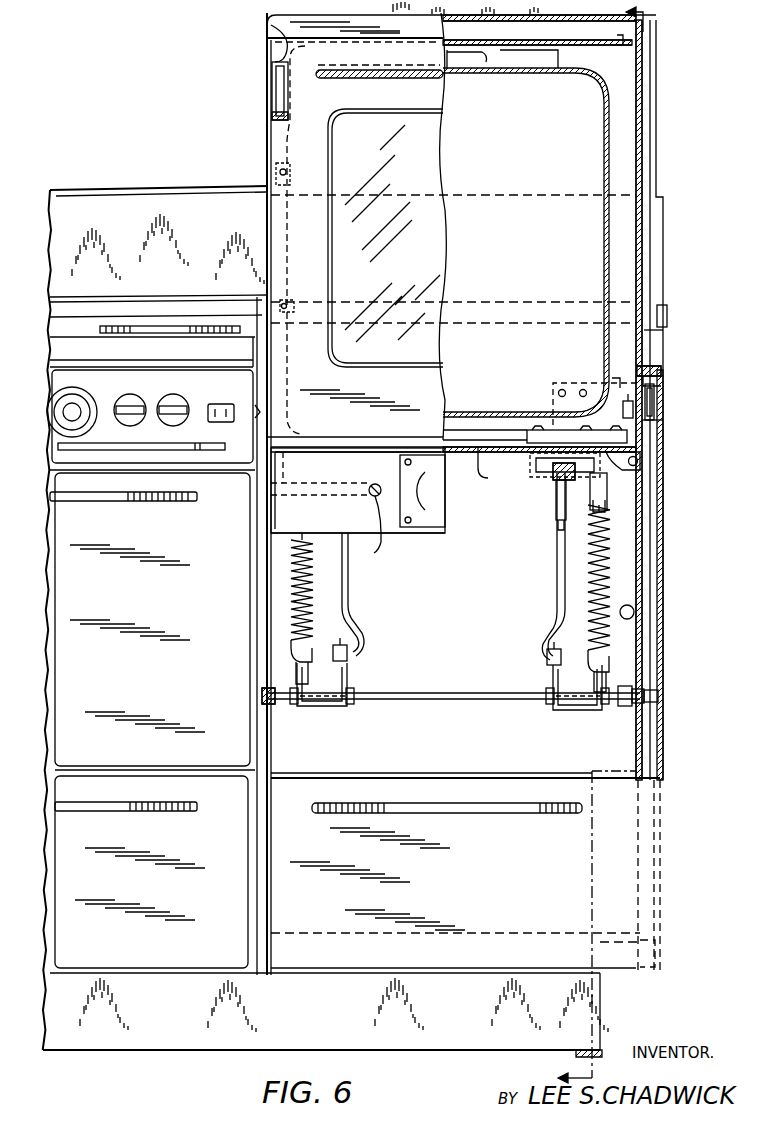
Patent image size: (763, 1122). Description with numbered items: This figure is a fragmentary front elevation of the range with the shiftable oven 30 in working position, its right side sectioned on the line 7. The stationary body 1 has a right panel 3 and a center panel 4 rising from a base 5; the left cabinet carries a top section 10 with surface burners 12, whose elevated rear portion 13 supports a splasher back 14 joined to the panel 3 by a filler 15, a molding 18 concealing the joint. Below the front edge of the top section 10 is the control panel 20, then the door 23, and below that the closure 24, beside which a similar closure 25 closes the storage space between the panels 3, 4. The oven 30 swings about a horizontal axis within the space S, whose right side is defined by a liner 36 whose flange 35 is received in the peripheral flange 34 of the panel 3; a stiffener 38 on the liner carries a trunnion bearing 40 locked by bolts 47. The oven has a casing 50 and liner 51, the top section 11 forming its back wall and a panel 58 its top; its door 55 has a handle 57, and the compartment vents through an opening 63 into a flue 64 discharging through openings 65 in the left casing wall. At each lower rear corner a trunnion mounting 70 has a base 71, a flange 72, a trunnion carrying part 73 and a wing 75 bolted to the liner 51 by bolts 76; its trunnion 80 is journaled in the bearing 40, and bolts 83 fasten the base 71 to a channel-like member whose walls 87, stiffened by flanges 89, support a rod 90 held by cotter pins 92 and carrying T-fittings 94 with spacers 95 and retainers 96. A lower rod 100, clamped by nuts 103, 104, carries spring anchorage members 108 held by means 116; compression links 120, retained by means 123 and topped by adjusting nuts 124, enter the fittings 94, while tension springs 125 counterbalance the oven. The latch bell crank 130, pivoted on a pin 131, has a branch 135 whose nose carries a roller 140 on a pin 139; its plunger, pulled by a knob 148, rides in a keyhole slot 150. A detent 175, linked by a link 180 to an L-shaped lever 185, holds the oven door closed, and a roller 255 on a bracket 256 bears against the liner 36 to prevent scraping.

The body structure 1 is at (52, 846).
The right panel 3 is at (660, 641).
The intermediate or center panel 4 is at (257, 634).
The base 5 is at (290, 1016).
The section line 7 is at (591, 545).
The top section 10 is at (105, 350).
The top section 11 is at (657, 166).
The heating elements or surface burners 12 is at (167, 332).
The elevated rear portion 13 is at (218, 325).
The splasher back 14 is at (184, 193).
The filler 15 is at (650, 334).
The molding 18 is at (84, 302).
The panel 20 is at (52, 378).
The door 23 is at (50, 560).
The closure 24 is at (190, 878).
The closure 25 is at (430, 880).
The shiftable oven 30 is at (643, 262).
The peripheral flange 34 is at (660, 370).
The flange 35 is at (660, 384).
The liner 36 is at (634, 612).
The stiffener 38 is at (645, 545).
The trunnion bearing 40 is at (640, 432).
The bolts 47 is at (657, 400).
The casing 50 is at (642, 104).
The liner 51 is at (600, 82).
The door 55 is at (447, 383).
The handle 57 is at (405, 78).
The panel 58 is at (268, 22).
The opening 63 is at (462, 68).
The flue 64 is at (275, 130).
The openings 65 is at (272, 96).
The trunnion mounting 70 is at (530, 428).
The base 71 is at (640, 450).
The flange 72 is at (527, 436).
The trunnion carrying part 73 is at (623, 408).
The wing 75 is at (617, 385).
The bolts 76 is at (583, 389).
The trunnion 80 is at (657, 412).
The bolts 83 is at (527, 478).
The wall 87 is at (607, 480).
The edge flange 89 is at (607, 500).
The rod 90 is at (492, 448).
The cotter pins 92 is at (620, 468).
The T-fitting 94 is at (555, 478).
The spacer 95 is at (560, 525).
The cotter pin and washer 96 is at (540, 490).
The second rod 100 is at (437, 700).
The nut 103 is at (625, 705).
The nut 104 is at (658, 690).
The spring anchorage member 108 is at (330, 712).
The means 116 is at (548, 690).
The compression links 120 is at (348, 580).
The means 123 is at (360, 650).
The adjusting nut 124 is at (556, 500).
The tension springs 125 is at (290, 586).
The bell crank 130 is at (330, 500).
The pin 131 is at (257, 503).
The branch 135 is at (298, 410).
The pin 139 is at (256, 410).
The roller 140 is at (256, 413).
The knob 148 is at (377, 483).
The keyhole slot 150 is at (378, 538).
The detent 175 is at (276, 170).
The link 180 is at (287, 225).
The L-shaped lever 185 is at (287, 358).
The roller 255 is at (640, 460).
The bracket 256 is at (553, 383).
The space S is at (428, 615).